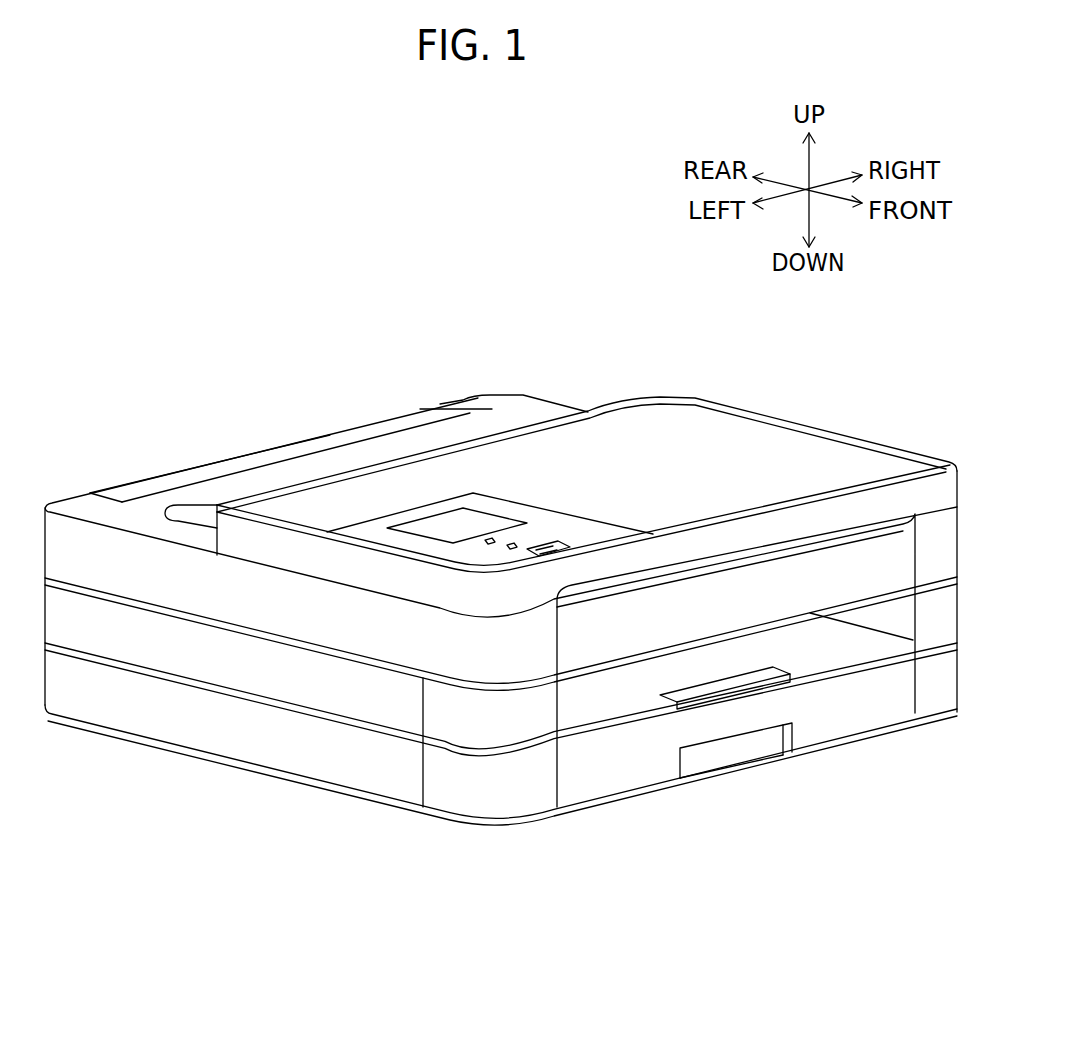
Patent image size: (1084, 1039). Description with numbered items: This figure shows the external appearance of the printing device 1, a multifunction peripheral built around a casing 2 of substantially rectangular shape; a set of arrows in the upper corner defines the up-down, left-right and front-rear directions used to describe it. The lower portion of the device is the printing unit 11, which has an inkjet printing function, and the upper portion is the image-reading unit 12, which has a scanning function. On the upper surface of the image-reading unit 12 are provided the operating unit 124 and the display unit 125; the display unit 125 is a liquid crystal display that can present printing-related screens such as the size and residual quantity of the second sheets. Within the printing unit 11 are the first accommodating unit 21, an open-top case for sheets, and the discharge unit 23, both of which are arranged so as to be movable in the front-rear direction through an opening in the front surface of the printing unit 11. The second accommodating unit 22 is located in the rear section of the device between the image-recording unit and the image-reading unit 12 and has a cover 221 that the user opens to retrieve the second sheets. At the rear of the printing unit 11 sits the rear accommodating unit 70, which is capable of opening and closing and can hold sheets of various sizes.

The printing device 1 is at (293, 345).
The casing 2 is at (398, 838).
The printing unit 11 is at (188, 718).
The image-reading unit 12 is at (637, 455).
The first accommodating unit 21 is at (605, 760).
The second accommodating unit 22 is at (460, 438).
The discharge unit 23 is at (600, 690).
The rear accommodating unit 70 is at (355, 425).
The operating unit 124 is at (493, 522).
The display unit 125 is at (423, 522).
The cover 221 is at (205, 512).